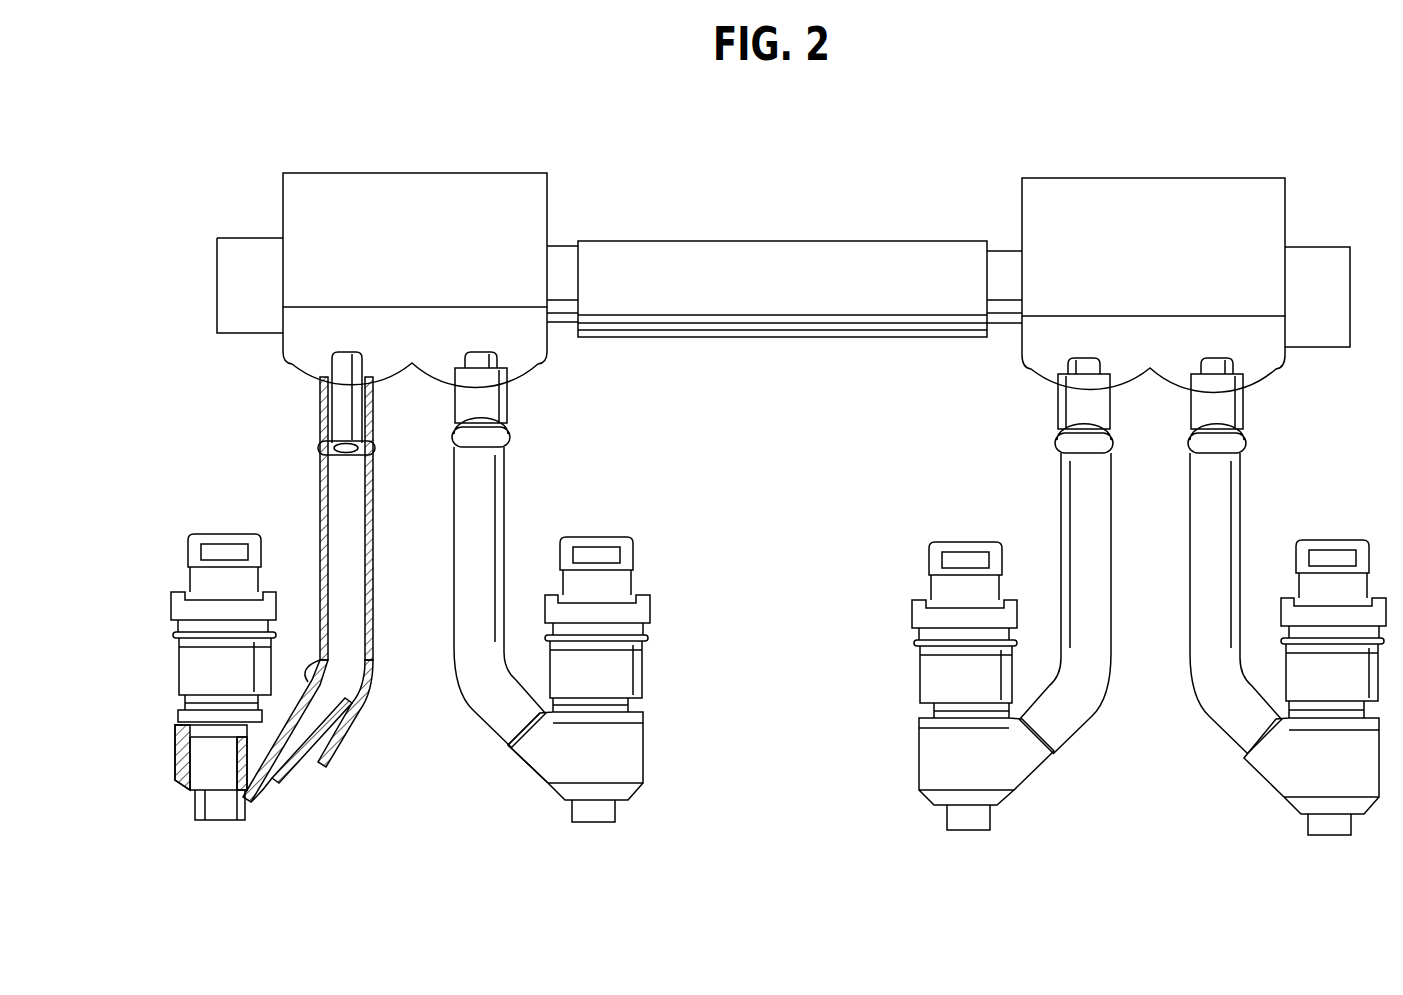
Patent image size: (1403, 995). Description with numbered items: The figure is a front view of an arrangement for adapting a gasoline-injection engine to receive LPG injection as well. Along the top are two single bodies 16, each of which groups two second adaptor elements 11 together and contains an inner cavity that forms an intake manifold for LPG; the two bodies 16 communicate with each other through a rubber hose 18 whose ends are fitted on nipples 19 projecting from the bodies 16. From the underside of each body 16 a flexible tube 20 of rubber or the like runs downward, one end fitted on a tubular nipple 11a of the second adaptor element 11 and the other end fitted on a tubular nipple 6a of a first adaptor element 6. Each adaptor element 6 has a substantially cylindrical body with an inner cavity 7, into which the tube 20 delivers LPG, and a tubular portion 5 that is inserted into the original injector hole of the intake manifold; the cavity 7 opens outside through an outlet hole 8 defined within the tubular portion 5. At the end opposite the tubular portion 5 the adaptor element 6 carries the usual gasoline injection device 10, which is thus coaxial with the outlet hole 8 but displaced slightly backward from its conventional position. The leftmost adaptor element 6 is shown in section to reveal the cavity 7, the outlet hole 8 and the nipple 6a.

The tubular portion 5 is at (250, 810).
The adaptor element 6 is at (746, 705).
The tubular nipple 6a is at (290, 760).
The inner cavity 7 is at (220, 763).
The outlet hole 8 is at (213, 815).
The gasoline injection device 10 is at (192, 670).
The second adaptor element 11 is at (310, 358).
The tubular nipple 11a is at (350, 396).
The single body 16 is at (432, 172).
The rubber hose 18 is at (753, 258).
The nipple 19 is at (558, 262).
The flexible tube 20 is at (320, 493).